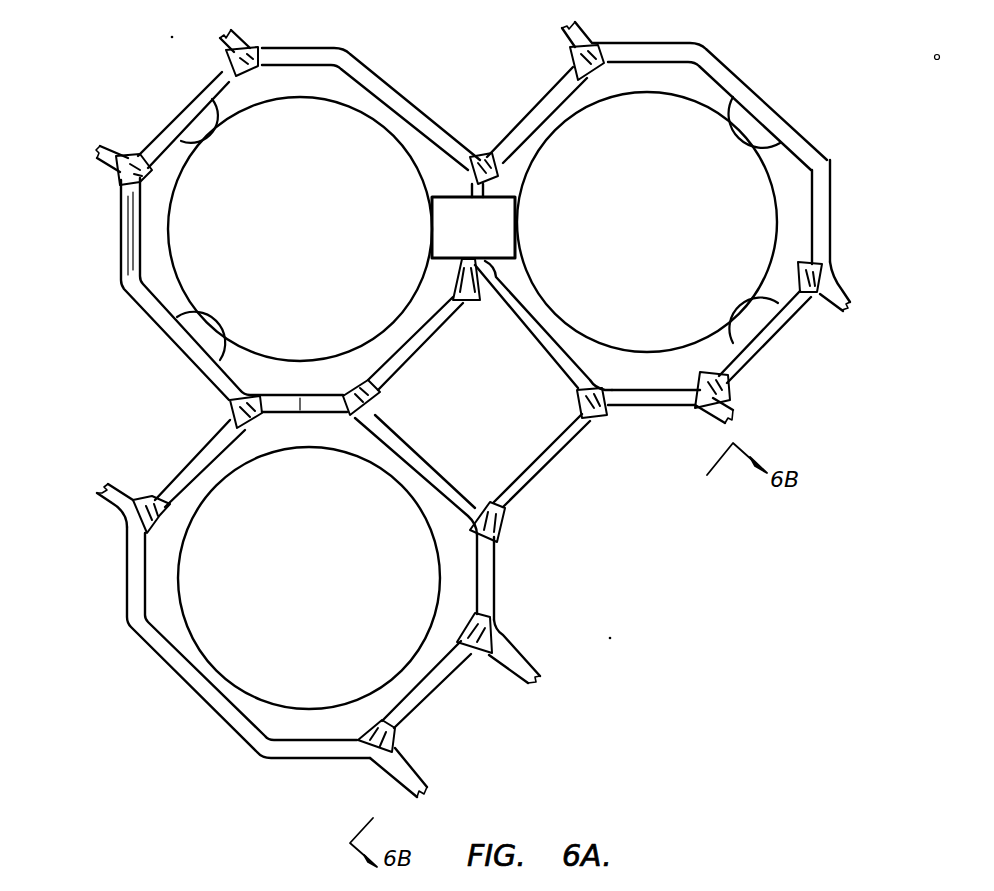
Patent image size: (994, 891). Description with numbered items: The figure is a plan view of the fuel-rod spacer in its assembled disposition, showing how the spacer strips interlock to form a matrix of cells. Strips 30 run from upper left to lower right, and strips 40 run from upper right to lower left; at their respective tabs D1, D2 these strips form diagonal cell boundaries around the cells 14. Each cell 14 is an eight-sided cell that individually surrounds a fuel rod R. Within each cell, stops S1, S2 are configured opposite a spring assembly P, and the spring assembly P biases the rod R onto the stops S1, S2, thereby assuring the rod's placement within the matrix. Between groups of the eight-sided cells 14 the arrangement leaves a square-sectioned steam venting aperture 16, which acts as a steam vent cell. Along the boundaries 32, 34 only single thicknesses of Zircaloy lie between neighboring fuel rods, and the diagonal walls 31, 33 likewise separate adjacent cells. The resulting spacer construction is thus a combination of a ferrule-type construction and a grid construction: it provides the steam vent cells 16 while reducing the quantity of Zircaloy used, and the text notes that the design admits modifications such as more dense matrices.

The cell 14 is at (313, 238).
The steam venting aperture 16 is at (507, 86).
The strip 30 is at (120, 233).
The diagonal wall 31 is at (207, 363).
The boundary 32 is at (307, 393).
The diagonal wall 33 is at (418, 457).
The boundary 34 is at (495, 580).
The strip 40 is at (768, 349).
The spring assembly P is at (500, 228).
The fuel rod R is at (667, 82).
The stop S1 is at (213, 323).
The stop S2 is at (210, 135).
The tab D1 is at (549, 468).
The tab D2 is at (419, 690).